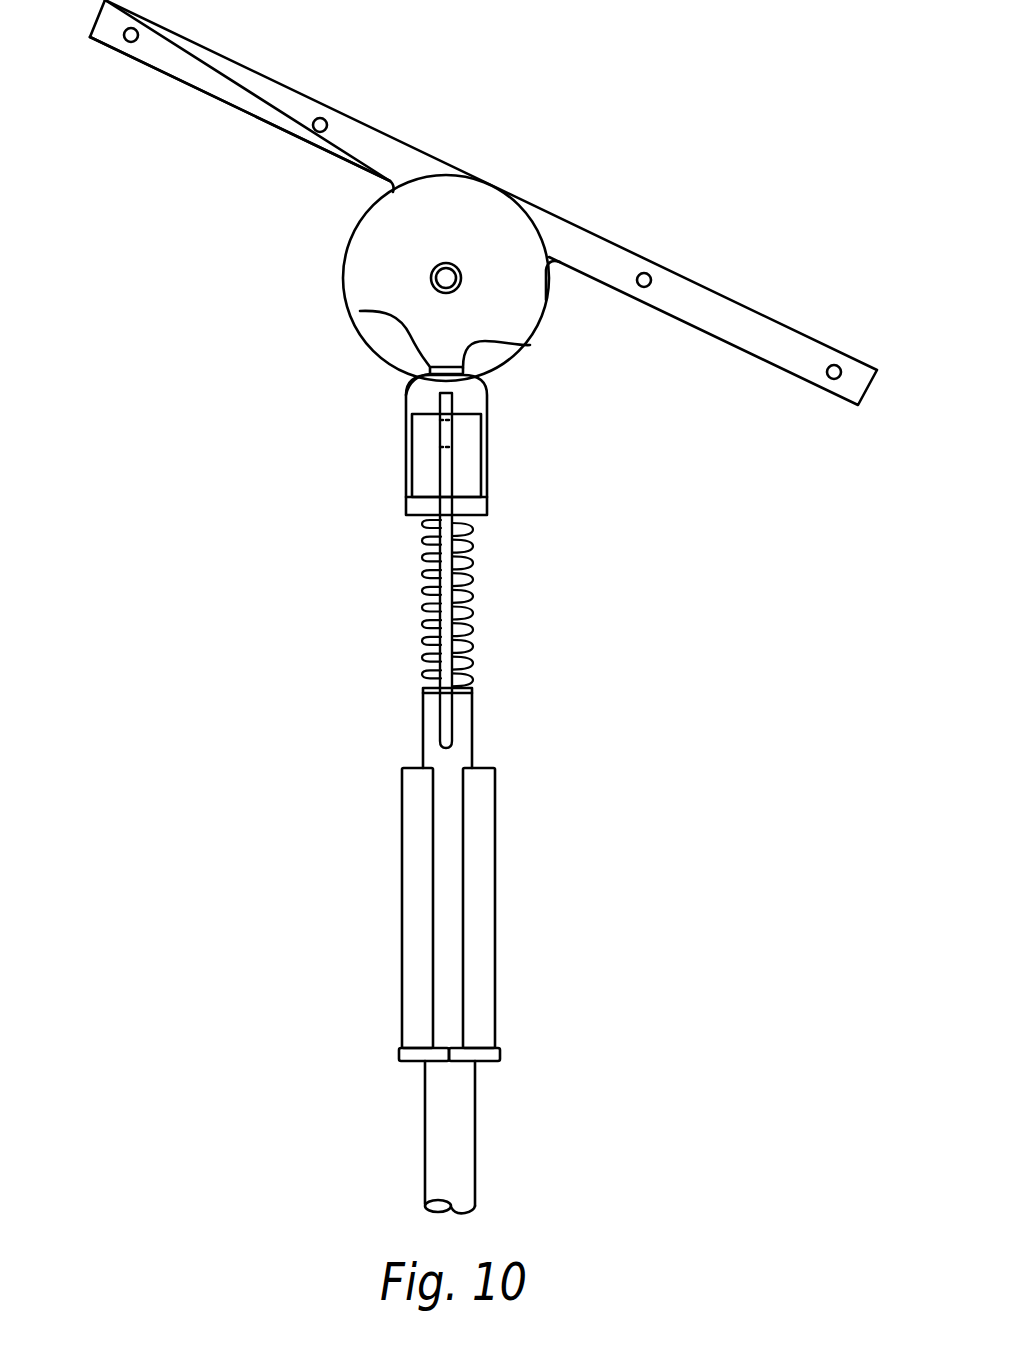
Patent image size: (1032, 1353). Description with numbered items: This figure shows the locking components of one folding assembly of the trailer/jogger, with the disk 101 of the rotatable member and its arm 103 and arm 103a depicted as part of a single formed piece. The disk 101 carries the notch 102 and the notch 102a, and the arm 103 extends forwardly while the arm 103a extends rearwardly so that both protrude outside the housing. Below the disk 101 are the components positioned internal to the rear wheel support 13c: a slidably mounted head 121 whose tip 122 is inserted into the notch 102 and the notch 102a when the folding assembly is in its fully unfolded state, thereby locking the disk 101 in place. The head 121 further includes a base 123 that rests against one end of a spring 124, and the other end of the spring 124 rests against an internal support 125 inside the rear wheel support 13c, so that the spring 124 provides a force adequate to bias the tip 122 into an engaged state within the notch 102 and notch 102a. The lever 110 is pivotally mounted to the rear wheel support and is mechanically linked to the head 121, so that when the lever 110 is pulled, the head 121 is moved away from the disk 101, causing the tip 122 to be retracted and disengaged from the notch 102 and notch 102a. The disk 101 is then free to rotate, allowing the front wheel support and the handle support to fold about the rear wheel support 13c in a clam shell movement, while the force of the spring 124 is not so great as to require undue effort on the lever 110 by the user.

The disk 101 is at (350, 248).
The notch 102 is at (530, 345).
The notch 102a is at (360, 311).
The arm 103 is at (745, 325).
The arm 103a is at (202, 68).
The lever 110 is at (447, 722).
The head 121 is at (488, 400).
The tip 122 is at (428, 372).
The base 123 is at (487, 518).
The spring 124 is at (470, 627).
The internal support 125 is at (433, 748).
The rear wheel support 13c is at (463, 1157).